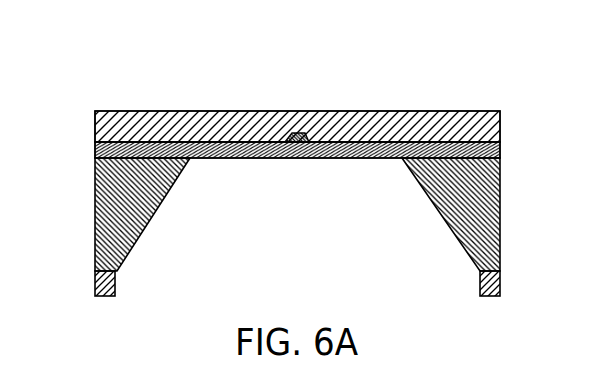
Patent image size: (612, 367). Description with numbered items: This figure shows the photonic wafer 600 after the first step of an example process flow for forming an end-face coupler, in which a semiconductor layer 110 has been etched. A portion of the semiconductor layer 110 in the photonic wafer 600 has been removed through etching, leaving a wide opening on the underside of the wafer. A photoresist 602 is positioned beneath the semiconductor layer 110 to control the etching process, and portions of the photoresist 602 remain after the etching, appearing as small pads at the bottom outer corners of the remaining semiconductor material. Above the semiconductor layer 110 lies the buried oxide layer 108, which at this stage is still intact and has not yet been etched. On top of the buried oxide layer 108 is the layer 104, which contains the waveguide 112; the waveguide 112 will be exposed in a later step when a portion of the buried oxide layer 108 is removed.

The photonic wafer 600 is at (322, 46).
The layer 104 is at (500, 127).
The buried oxide layer 108 is at (500, 152).
The semiconductor layer 110 is at (500, 215).
The waveguide 112 is at (297, 133).
The photoresist 602 is at (95, 282).